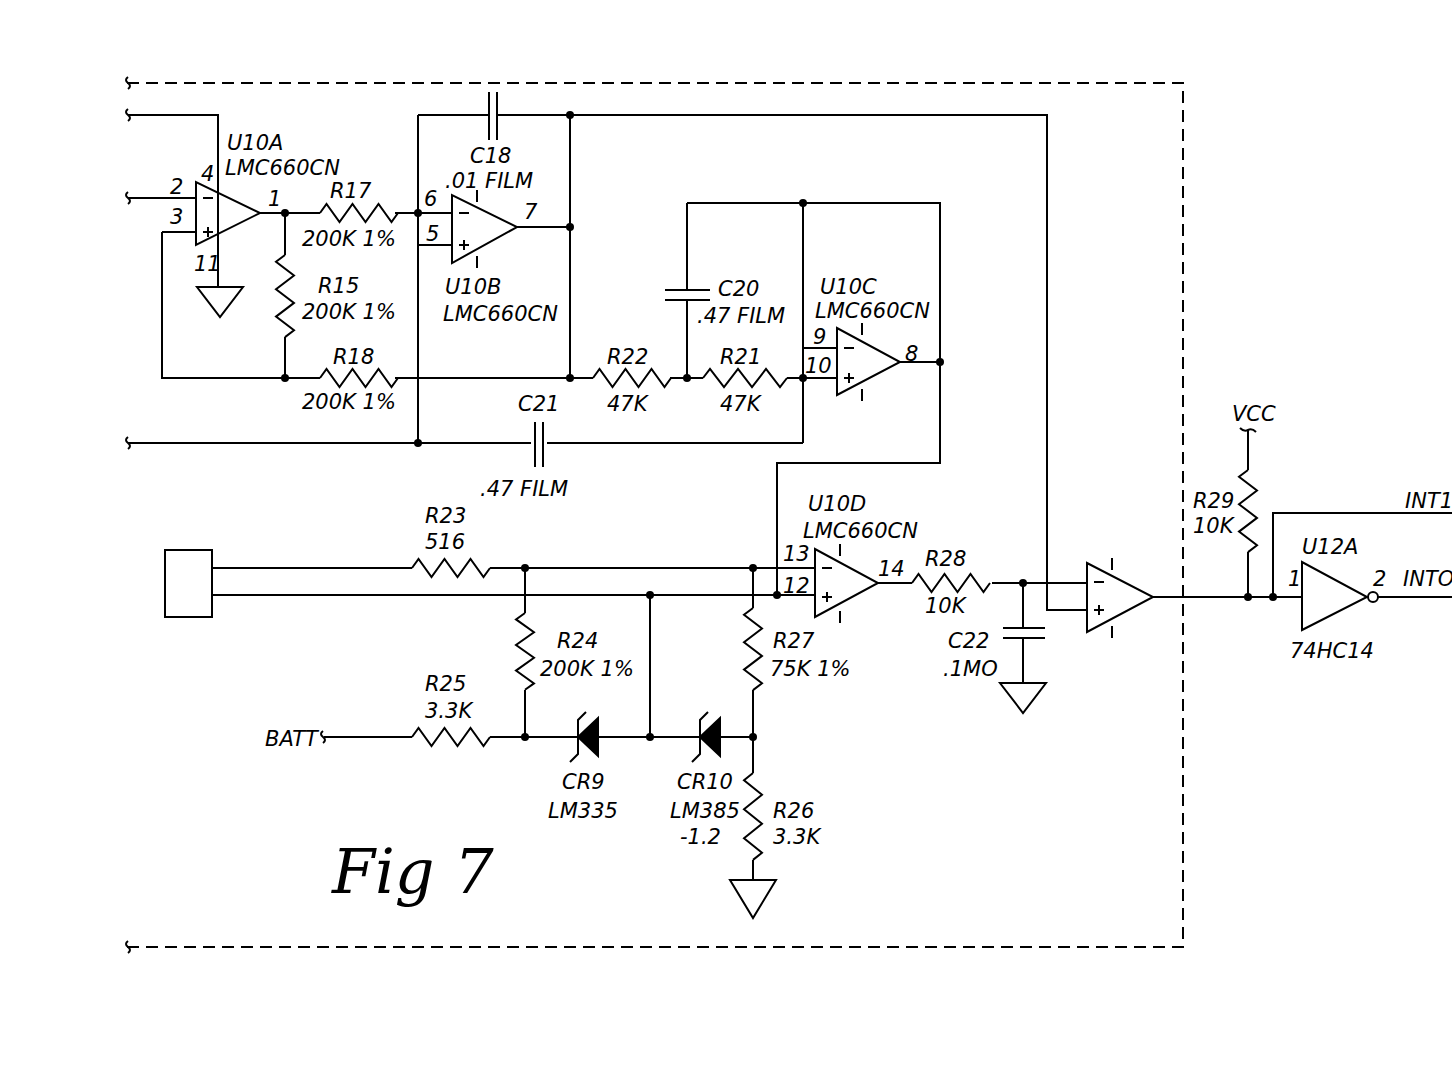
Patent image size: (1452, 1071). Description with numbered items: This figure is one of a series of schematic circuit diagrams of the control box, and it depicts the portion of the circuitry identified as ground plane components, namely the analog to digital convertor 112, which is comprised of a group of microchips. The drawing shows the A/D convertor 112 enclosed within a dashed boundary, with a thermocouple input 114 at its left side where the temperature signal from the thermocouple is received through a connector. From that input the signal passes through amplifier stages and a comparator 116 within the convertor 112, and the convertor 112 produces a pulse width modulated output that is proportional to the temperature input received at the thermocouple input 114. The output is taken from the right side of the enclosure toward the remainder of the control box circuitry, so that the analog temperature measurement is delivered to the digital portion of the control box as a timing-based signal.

The analog to digital convertor 112 is at (1198, 173).
The thermocouple input 114 is at (173, 600).
The comparator U11B 116 is at (1118, 600).